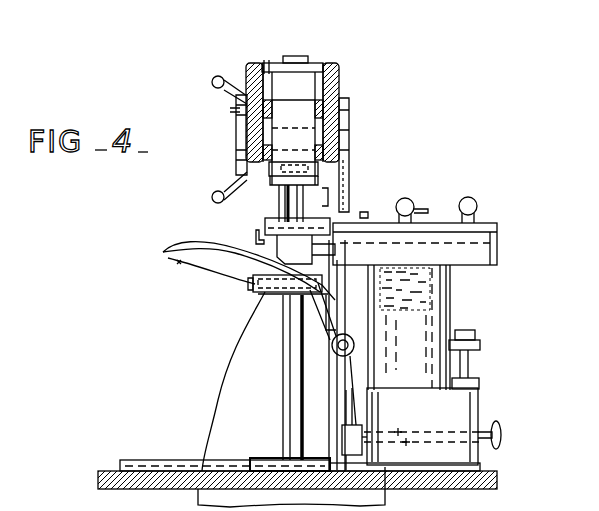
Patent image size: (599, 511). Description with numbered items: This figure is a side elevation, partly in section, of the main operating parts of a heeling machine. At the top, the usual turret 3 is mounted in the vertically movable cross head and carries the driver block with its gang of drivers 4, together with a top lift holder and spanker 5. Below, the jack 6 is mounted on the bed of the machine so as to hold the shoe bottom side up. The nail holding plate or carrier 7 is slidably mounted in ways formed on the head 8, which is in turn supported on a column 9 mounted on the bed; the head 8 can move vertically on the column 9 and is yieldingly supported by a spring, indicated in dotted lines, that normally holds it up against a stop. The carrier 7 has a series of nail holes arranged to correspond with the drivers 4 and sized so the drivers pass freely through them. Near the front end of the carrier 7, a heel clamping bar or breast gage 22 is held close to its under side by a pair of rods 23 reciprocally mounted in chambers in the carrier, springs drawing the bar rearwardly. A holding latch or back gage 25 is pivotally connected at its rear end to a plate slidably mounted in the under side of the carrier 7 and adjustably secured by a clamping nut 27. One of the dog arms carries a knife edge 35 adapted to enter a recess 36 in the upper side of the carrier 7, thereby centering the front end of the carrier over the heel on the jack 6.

The turret 3 is at (305, 112).
The drivers 4 is at (318, 200).
The top lift holder and spanker 5 is at (298, 62).
The jack 6 is at (285, 388).
The nail holding plate or carrier 7 is at (366, 212).
The head 8 is at (458, 258).
The column 9 is at (470, 366).
The heel clamping bar or breast gage 22 is at (278, 250).
The rods 23 is at (256, 236).
The holding latch or back gage 25 is at (260, 281).
The clamping nut 27 is at (410, 205).
The knife edge 35 is at (331, 200).
The recess 36 is at (364, 212).